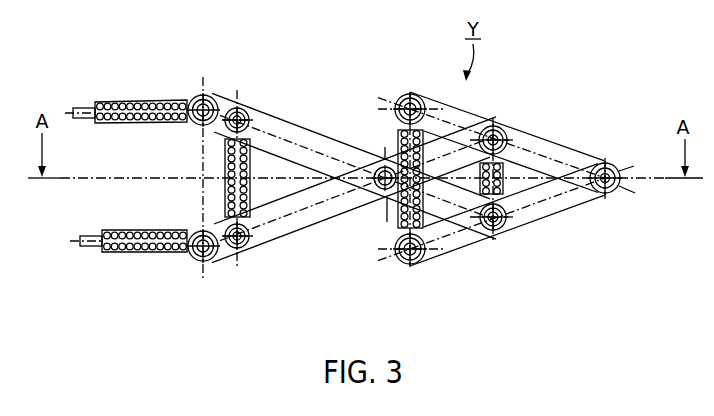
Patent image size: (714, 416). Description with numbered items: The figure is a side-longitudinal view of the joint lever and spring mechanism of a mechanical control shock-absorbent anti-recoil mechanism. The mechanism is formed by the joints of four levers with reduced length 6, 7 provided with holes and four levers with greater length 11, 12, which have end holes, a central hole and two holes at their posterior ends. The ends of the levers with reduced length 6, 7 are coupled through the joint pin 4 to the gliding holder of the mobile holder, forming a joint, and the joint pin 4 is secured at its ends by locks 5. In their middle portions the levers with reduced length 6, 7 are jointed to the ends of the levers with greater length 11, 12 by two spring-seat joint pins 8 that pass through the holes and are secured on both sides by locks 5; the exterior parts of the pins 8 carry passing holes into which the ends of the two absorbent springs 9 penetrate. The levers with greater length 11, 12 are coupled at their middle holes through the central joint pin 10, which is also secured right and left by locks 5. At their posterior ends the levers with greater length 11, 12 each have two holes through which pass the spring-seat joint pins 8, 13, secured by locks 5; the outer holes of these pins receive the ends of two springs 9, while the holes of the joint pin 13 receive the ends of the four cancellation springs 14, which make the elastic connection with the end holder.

The joint pin 4 is at (609, 164).
The locks 5 is at (608, 197).
The lever with reduced length 6 is at (533, 215).
The lever with reduced length 7 is at (548, 150).
The spring-seat joint pin 8 is at (241, 109).
The absorbent spring 9 is at (224, 168).
The central joint pin 10 is at (383, 194).
The lever with greater length 11 is at (290, 227).
The lever with greater length 12 is at (314, 140).
The spring-seat joint pin 13 is at (209, 96).
The cancellation spring 14 is at (136, 104).